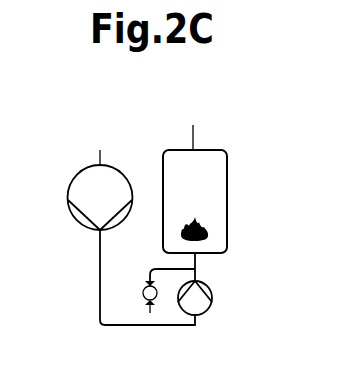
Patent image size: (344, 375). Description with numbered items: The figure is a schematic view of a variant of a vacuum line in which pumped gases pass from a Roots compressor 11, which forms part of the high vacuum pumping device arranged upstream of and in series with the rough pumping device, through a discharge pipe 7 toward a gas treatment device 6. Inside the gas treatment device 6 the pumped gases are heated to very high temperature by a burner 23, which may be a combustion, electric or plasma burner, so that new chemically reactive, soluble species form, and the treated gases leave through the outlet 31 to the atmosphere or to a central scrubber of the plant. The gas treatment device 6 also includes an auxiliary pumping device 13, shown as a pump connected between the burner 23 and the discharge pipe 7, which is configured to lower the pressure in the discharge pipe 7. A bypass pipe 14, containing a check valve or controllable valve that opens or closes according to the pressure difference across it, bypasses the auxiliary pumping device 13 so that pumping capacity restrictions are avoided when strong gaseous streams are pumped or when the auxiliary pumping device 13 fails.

The gas treatment device 6 is at (234, 193).
The discharge pipe 7 is at (100, 295).
The Roots compressor 11 is at (81, 169).
The auxiliary pumping device 13 is at (213, 304).
The bypass pipe 14 is at (151, 267).
The burner 23 is at (210, 150).
The outlet 31 is at (193, 137).